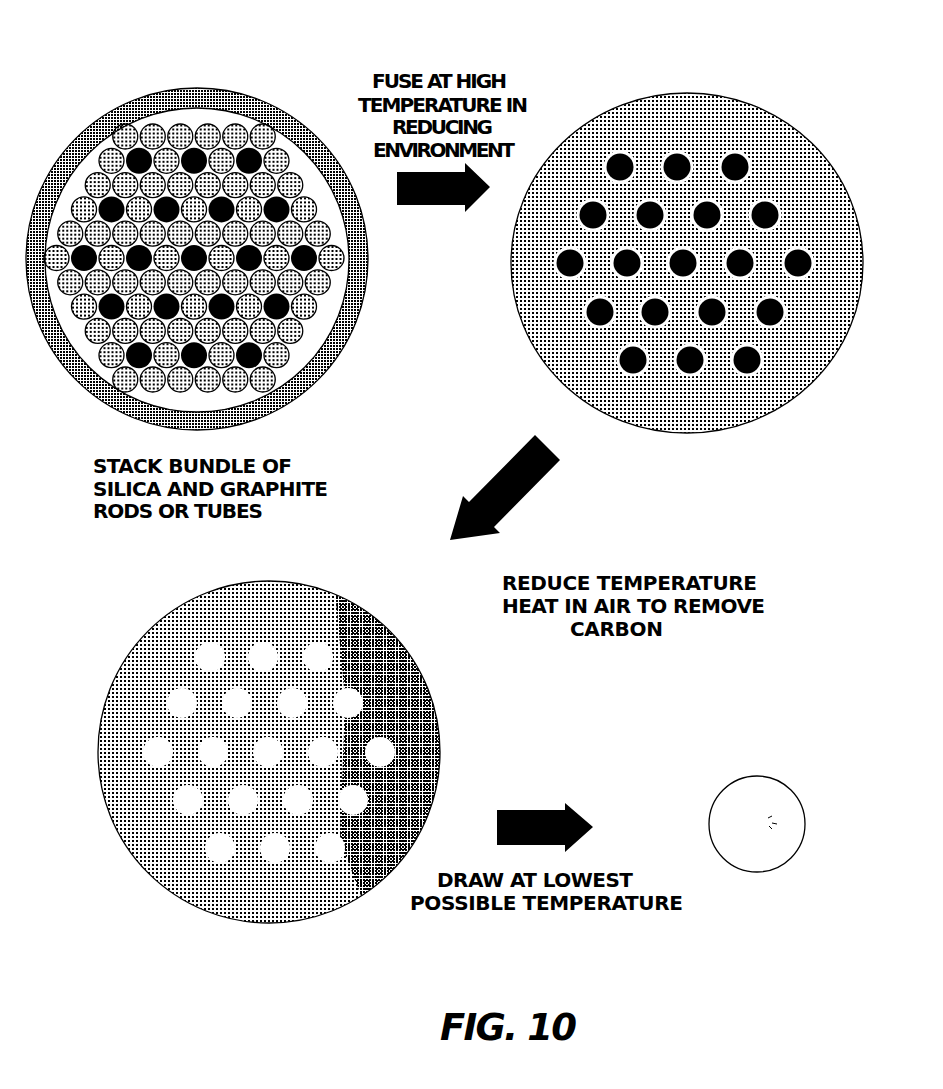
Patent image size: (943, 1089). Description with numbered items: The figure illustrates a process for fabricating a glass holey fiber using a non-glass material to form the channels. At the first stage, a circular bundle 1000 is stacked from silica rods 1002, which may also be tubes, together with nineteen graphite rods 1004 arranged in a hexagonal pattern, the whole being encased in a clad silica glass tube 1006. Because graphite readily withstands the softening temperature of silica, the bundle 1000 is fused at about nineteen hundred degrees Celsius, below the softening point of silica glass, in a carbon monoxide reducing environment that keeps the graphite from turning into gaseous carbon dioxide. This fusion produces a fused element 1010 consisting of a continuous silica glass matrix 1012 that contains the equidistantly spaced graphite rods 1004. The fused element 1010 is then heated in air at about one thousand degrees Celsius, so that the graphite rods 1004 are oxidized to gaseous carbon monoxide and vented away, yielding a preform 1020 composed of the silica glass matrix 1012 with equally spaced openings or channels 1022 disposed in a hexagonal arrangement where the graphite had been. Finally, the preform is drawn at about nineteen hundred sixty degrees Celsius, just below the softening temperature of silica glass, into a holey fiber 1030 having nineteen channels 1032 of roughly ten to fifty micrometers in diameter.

The circular bundle 1000 is at (282, 100).
The silica rods 1002 is at (107, 118).
The graphite rods 1004 is at (290, 214).
The clad silica glass tube 1006 is at (320, 370).
The fused element 1010 is at (683, 90).
The silica glass matrix 1012 is at (727, 127).
The preform 1020 is at (145, 630).
The openings or channels 1022 is at (357, 800).
The holey fiber 1030 is at (757, 777).
The channels 1032 is at (763, 828).